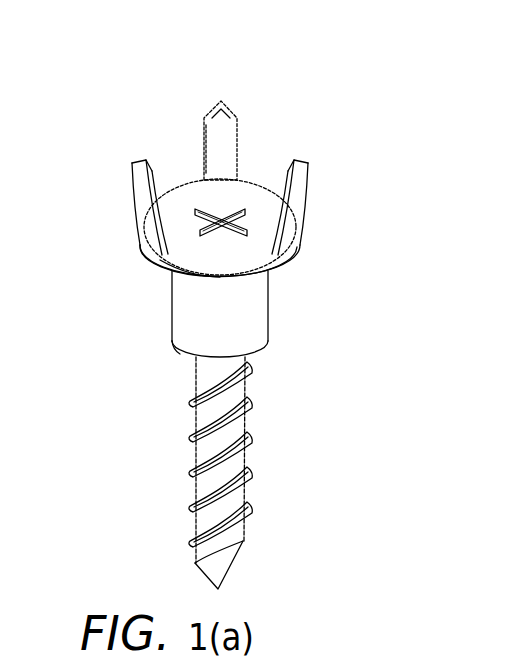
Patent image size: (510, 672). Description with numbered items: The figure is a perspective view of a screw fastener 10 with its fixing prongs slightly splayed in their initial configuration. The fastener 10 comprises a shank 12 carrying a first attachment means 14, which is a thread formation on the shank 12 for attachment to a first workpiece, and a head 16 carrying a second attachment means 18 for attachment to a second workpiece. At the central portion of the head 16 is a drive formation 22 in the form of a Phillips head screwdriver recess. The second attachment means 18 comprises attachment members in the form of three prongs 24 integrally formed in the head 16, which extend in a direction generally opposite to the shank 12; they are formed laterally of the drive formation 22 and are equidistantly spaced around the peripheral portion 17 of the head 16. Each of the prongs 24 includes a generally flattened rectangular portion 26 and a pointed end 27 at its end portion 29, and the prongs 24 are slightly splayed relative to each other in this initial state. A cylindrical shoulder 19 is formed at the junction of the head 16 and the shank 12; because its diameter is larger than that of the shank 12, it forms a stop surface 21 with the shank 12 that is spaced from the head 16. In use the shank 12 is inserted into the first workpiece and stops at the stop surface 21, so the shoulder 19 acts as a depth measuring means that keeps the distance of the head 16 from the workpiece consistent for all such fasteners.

The fastener 10 is at (500, 108).
The shank 12 is at (205, 519).
The first attachment means 14 is at (254, 408).
The head 16 is at (236, 262).
The peripheral portion 17 is at (184, 273).
The second attachment means 18 is at (148, 215).
The cylindrical shoulder 19 is at (275, 333).
The stop surface 21 is at (175, 347).
The drive formation 22 is at (238, 223).
The prongs 24 is at (144, 156).
The flattened rectangular portion 26 is at (227, 160).
The pointed end 27 is at (228, 118).
The end portion 29 is at (220, 132).